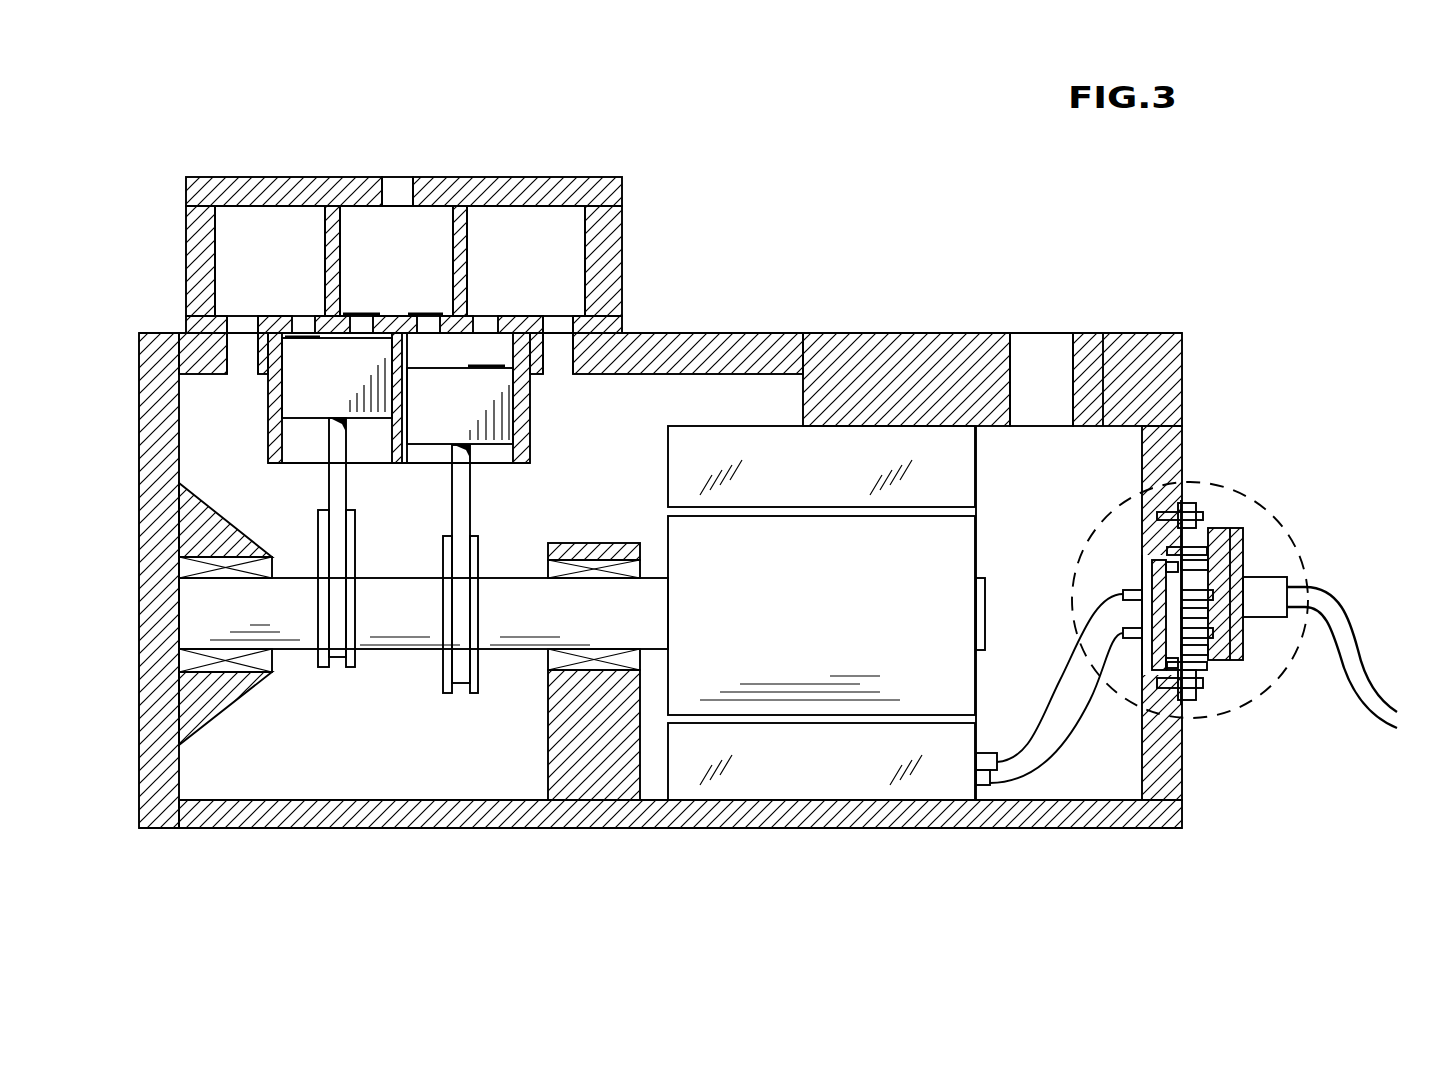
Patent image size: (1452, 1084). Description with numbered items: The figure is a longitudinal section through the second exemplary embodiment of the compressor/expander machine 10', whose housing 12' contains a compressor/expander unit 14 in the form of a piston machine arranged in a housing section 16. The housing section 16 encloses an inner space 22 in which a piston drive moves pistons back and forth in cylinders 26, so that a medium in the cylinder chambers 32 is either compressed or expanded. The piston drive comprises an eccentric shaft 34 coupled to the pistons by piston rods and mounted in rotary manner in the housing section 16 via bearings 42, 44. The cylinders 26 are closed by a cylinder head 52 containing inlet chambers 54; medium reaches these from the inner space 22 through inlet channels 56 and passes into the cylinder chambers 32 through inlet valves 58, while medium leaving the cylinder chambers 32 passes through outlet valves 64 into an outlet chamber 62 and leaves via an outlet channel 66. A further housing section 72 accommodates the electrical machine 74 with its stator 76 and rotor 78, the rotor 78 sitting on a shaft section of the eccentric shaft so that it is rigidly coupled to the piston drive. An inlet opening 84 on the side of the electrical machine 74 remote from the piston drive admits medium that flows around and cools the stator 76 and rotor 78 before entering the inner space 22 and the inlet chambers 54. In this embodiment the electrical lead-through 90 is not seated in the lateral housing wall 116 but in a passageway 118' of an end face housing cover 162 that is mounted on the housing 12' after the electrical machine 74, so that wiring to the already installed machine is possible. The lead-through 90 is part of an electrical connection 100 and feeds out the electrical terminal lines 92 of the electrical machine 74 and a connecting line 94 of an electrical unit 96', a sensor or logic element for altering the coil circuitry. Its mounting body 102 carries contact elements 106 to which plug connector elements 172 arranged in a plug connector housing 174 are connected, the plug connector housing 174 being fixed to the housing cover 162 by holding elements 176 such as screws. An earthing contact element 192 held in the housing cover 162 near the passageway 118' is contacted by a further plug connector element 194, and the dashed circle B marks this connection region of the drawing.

The compressor/expander machine 10' is at (937, 228).
The housing 12' is at (660, 521).
The compressor/expander unit 14 is at (378, 670).
The housing section 16 is at (410, 842).
The inner space 22 is at (247, 757).
The cylinders 26 is at (306, 414).
The cylinder chambers 32 is at (341, 340).
The eccentric shaft 34 is at (520, 620).
The bearing 42 is at (205, 660).
The bearing 44 is at (640, 660).
The cylinder head 52 is at (560, 152).
The inlet chambers 54 is at (237, 226).
The inlet channels 56 is at (243, 318).
The inlet valves 58 is at (300, 320).
The outlet chamber 62 is at (428, 228).
The outlet valves 64 is at (400, 310).
The outlet channel 66 is at (400, 195).
The housing section 72 is at (765, 842).
The electrical machine 74 is at (1002, 526).
The stator 76 is at (885, 758).
The rotor 78 is at (821, 615).
The inlet opening 84 is at (1037, 340).
The electrical lead-through 90 is at (1248, 585).
The electrical terminal lines 92 is at (1073, 757).
The electrical connecting line 94 is at (1023, 757).
The electrical unit 96' is at (972, 832).
The electrical connection 100 is at (1322, 567).
The mounting body 102 is at (1185, 538).
The contact elements 106 is at (1190, 640).
The lateral housing wall 116 is at (808, 352).
The passageway 118' is at (1296, 564).
The end face housing cover 162 is at (1163, 360).
The plug connector elements 172 is at (1227, 637).
The plug connector housing 174 is at (1212, 625).
The holding elements 176 is at (1188, 695).
The earthing contact element 192 is at (1200, 548).
The plug connector element 194 is at (1225, 552).
The detail region B is at (1263, 698).